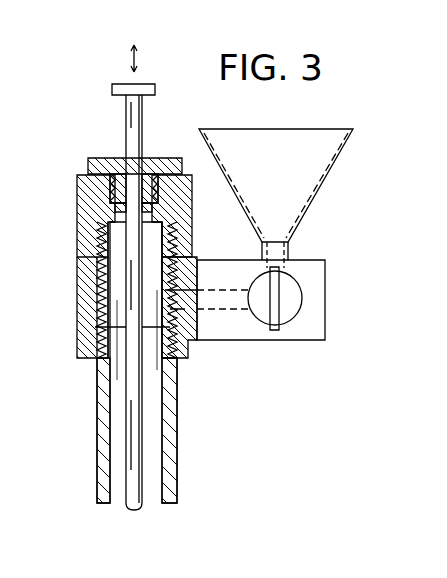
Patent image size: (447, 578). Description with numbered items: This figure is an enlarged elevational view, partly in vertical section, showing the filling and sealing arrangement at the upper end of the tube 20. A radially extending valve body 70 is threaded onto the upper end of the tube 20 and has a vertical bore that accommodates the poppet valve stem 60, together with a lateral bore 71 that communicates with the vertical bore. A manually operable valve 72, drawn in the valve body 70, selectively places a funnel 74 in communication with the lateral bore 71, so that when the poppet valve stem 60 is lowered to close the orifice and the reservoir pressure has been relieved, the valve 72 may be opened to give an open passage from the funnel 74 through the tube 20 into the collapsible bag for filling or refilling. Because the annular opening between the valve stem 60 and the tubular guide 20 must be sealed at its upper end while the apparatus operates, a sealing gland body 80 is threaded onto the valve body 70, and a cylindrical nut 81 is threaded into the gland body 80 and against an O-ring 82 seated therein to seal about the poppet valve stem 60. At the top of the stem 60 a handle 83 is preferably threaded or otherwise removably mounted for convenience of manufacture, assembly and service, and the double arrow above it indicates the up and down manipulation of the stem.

The tube 20 is at (190, 455).
The poppet valve stem 60 is at (143, 496).
The valve body 70 is at (238, 253).
The lateral bore 71 is at (188, 341).
The manually operable valve 72 is at (296, 300).
The funnel 74 is at (318, 162).
The sealing gland body 80 is at (82, 190).
The cylindrical nut 81 is at (110, 162).
The O-ring 82 is at (115, 207).
The handle 83 is at (147, 88).